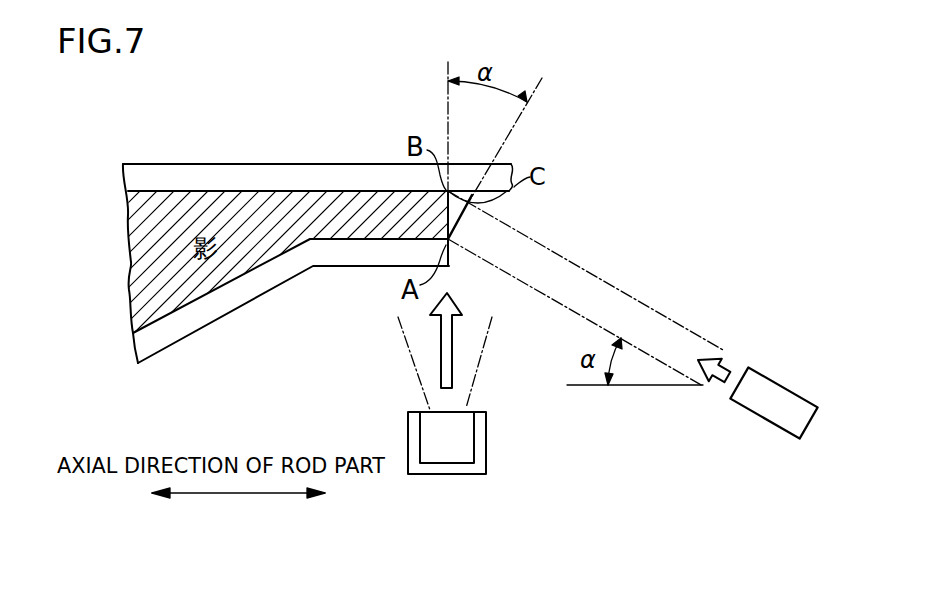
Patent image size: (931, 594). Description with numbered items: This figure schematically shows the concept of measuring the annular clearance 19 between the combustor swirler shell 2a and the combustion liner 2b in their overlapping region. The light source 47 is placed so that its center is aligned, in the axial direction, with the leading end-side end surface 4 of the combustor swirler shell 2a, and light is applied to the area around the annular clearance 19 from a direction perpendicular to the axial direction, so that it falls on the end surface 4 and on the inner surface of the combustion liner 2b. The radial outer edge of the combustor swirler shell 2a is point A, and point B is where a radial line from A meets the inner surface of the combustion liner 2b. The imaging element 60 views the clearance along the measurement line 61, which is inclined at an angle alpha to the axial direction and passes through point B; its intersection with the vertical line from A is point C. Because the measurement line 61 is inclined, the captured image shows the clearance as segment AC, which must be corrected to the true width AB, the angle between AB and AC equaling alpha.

The combustor swirler shell 2a is at (217, 300).
The combustion liner 2b is at (282, 173).
The leading end-side end surface 4 is at (450, 258).
The annular clearance 19 is at (498, 202).
The light source 47 is at (440, 442).
The imaging element 60 is at (787, 389).
The measurement line 61 is at (588, 276).